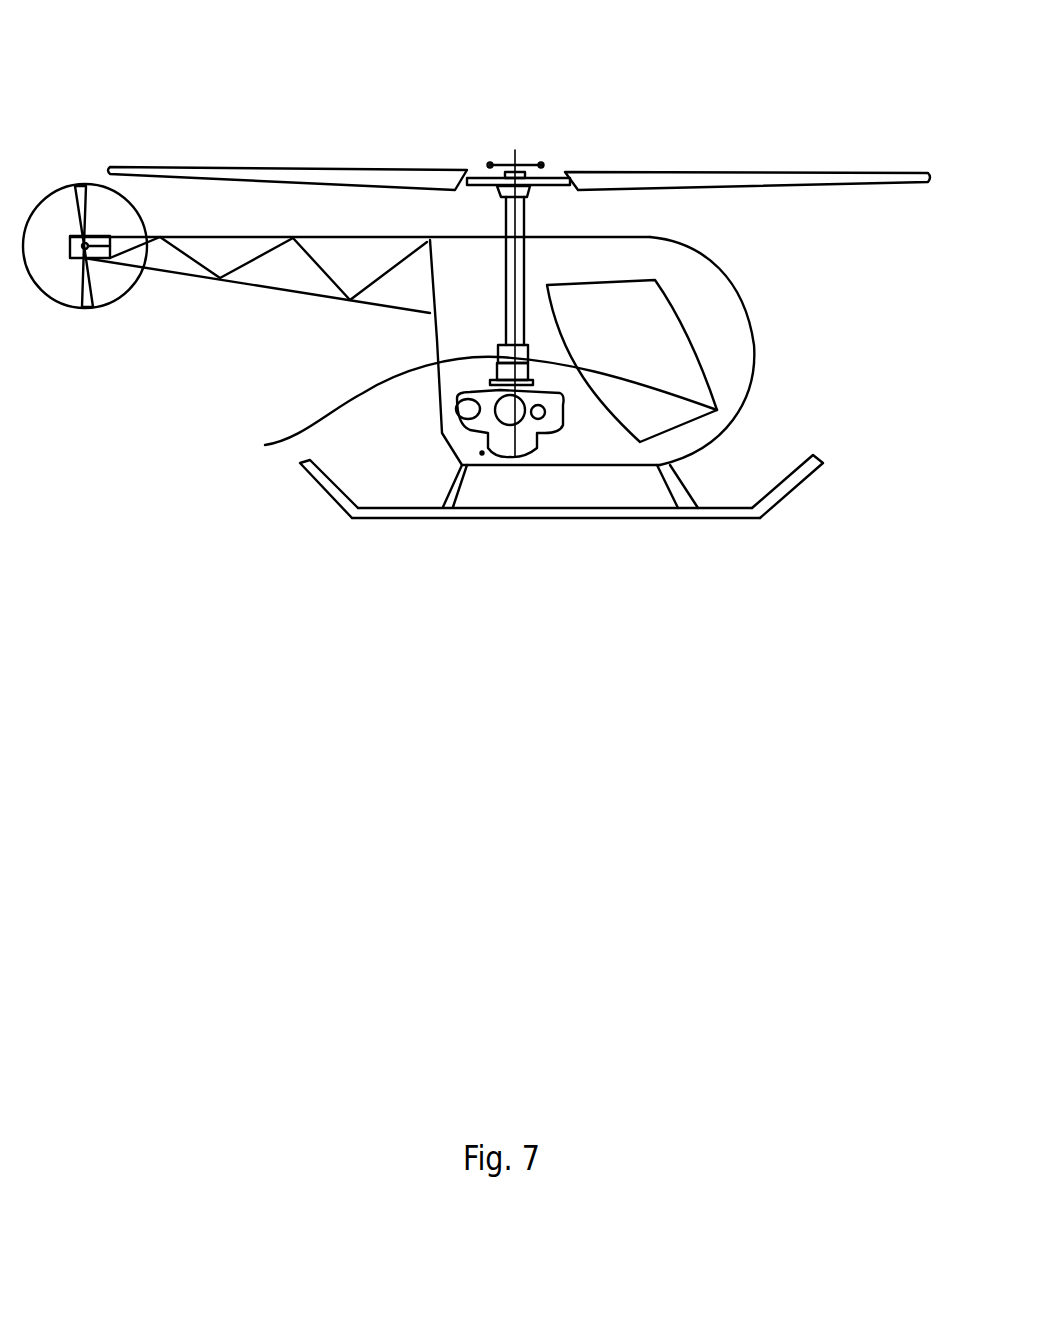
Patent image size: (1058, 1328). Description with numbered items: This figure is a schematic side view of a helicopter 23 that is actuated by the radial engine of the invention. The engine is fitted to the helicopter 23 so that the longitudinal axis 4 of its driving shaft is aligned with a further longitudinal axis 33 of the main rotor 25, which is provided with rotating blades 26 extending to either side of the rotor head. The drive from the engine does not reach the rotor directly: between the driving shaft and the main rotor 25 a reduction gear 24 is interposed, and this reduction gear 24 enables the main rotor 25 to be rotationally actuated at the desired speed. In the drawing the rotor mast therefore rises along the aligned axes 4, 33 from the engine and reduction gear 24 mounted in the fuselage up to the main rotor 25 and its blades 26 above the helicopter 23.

The longitudinal axis 4 is at (476, 410).
The helicopter 23 is at (345, 543).
The reduction gear 24 is at (717, 410).
The main rotor 25 is at (565, 158).
The rotating blades 26 is at (385, 183).
The further longitudinal axis 33 is at (512, 210).